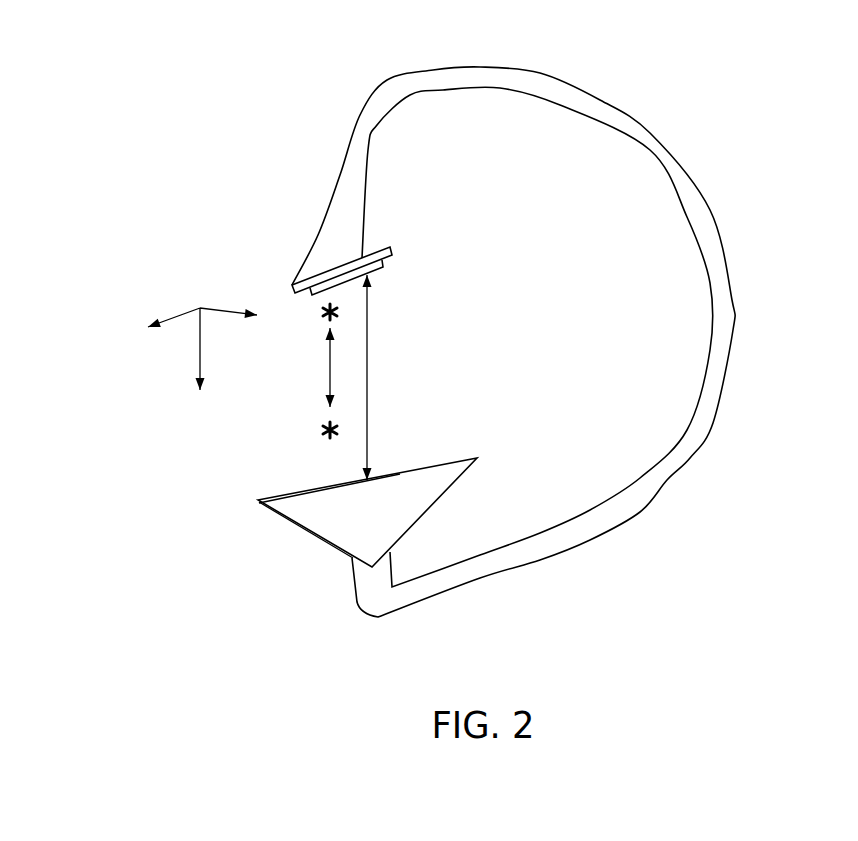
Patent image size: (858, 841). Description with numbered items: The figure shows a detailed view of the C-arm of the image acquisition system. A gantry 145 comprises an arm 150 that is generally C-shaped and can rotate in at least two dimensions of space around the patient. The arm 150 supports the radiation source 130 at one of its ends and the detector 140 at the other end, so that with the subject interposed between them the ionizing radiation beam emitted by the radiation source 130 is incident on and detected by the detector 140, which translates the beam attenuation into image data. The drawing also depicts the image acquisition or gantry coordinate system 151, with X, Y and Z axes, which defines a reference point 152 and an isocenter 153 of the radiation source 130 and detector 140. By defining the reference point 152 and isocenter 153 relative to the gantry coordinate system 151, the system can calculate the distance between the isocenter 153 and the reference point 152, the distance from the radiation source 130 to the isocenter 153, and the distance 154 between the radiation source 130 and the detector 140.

The radiation source 130 is at (457, 492).
The detector 140 is at (397, 243).
The gantry 145 is at (680, 130).
The arm 150 is at (725, 327).
The gantry coordinate system 151 is at (198, 297).
The reference point 152 is at (348, 432).
The isocenter 153 is at (348, 303).
The source-to-detector distance 154 is at (368, 367).